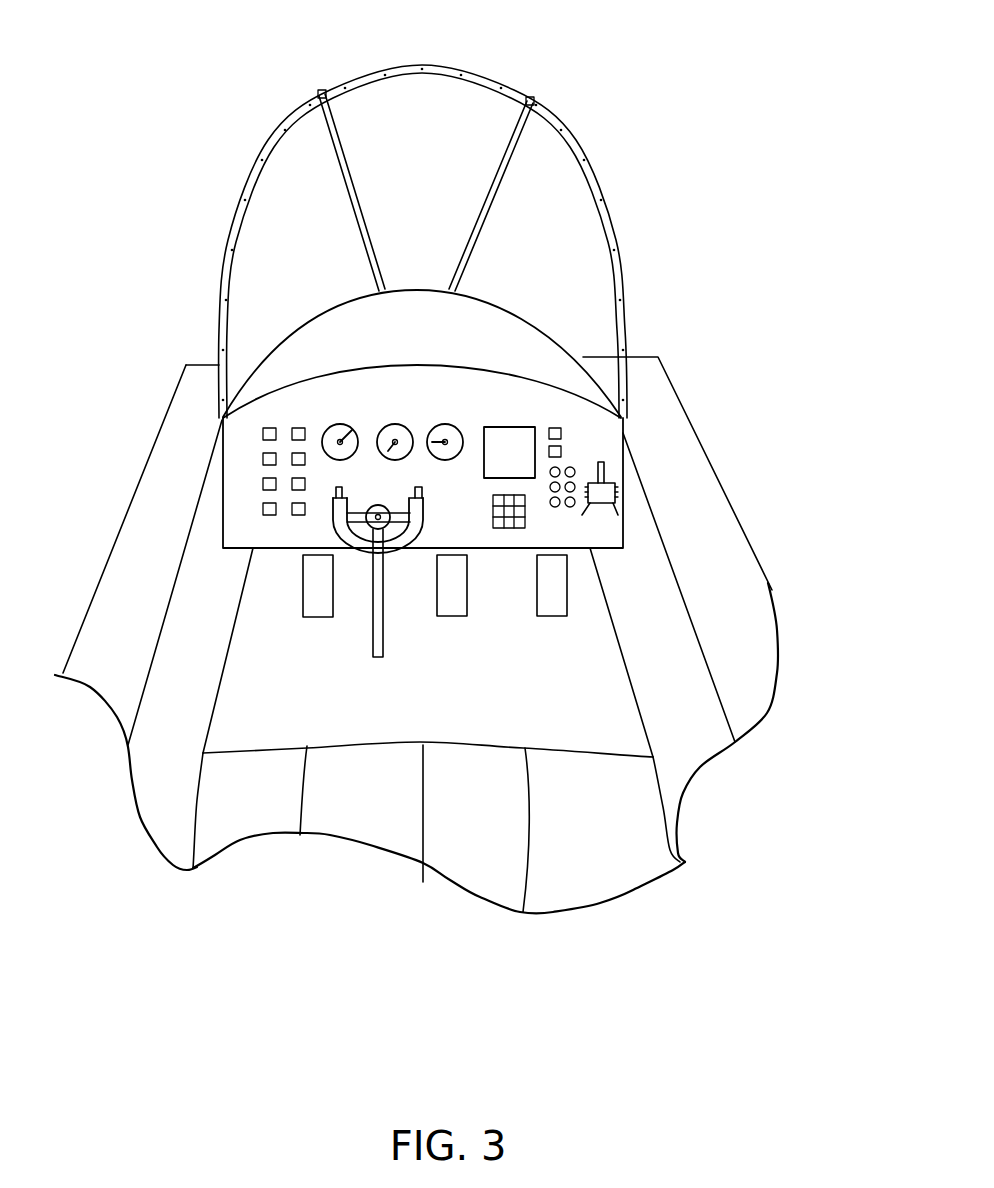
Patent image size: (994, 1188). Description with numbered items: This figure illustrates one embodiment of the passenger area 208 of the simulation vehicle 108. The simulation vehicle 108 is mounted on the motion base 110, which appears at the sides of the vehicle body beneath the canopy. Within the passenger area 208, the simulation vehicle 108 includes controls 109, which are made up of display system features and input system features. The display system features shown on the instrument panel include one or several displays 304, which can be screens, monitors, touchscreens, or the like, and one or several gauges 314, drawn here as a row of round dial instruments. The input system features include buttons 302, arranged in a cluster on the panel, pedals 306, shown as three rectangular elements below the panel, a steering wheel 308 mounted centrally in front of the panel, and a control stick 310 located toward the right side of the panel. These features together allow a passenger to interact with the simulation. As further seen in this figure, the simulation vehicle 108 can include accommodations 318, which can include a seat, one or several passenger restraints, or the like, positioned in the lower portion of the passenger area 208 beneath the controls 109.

The simulation vehicle 108 is at (740, 53).
The passenger area 208 is at (745, 305).
The controls 109 is at (470, 385).
The motion base 110 is at (697, 497).
The buttons 302 is at (285, 422).
The displays 304 is at (503, 427).
The pedals 306 is at (303, 590).
The steering wheels 308 is at (393, 561).
The control sticks 310 is at (605, 455).
The gauges 314 is at (342, 424).
The accommodations 318 is at (618, 833).